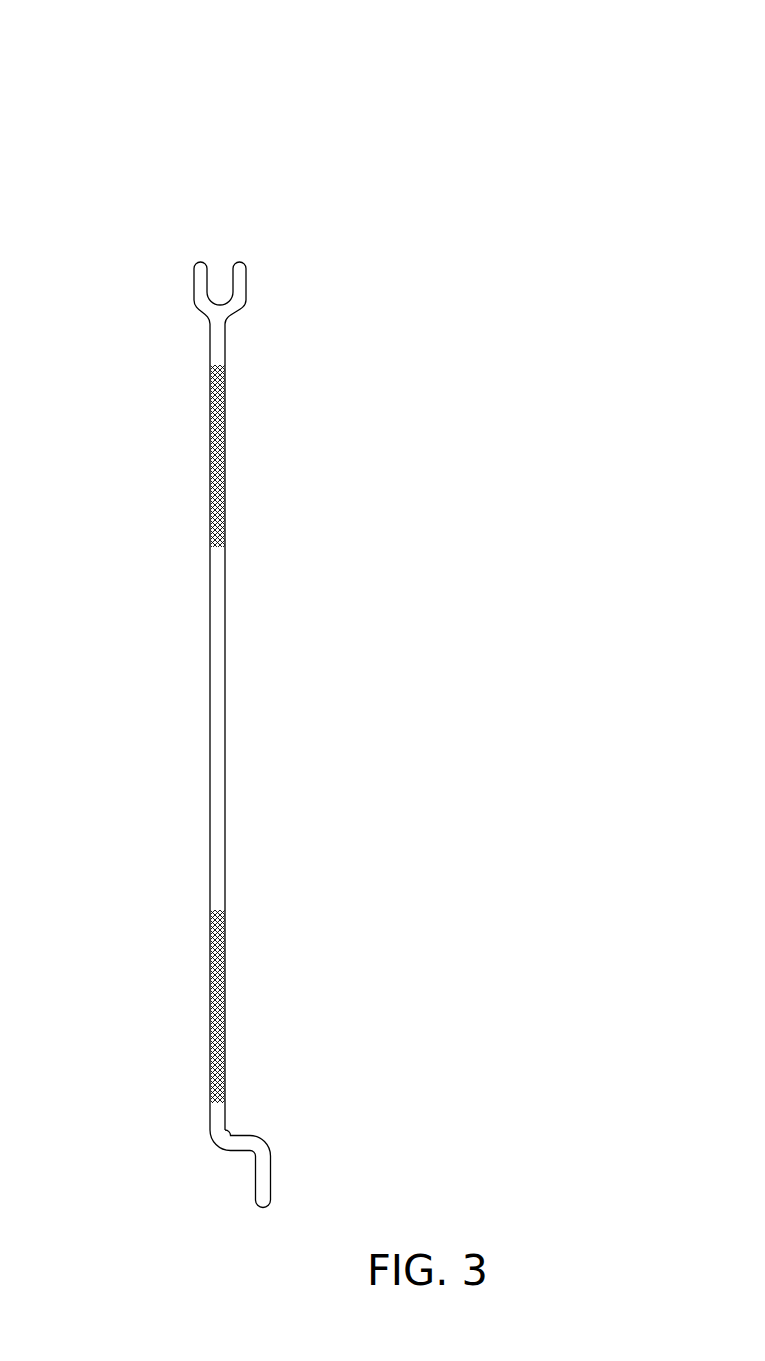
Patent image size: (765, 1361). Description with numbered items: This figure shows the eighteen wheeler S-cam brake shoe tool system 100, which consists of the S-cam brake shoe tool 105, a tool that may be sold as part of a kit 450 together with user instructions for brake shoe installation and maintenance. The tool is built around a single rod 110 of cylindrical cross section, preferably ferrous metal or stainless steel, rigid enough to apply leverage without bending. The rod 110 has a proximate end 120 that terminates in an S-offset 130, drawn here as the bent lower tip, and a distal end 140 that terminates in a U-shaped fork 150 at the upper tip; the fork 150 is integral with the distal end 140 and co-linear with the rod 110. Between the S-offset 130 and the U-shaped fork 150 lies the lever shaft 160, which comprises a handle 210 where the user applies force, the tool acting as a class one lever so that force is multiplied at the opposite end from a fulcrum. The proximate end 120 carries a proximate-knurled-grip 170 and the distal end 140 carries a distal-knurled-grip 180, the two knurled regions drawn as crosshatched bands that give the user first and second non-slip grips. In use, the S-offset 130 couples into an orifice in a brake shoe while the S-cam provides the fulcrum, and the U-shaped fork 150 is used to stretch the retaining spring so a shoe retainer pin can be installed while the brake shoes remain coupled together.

The 18 wheeler S-cam brake shoe tool system 100 is at (396, 86).
The S-cam brake shoe tool 105 is at (428, 132).
The kit 450 is at (461, 181).
The rod 110 is at (227, 733).
The proximate end 120 is at (209, 1129).
The S-offset 130 is at (261, 1141).
The distal end 140 is at (209, 331).
The U-shaped fork 150 is at (247, 260).
The lever shaft 160 is at (227, 635).
The proximate-knurled-grip 170 is at (209, 1017).
The distal-knurled-grip 180 is at (209, 462).
The handle 210 is at (227, 435).